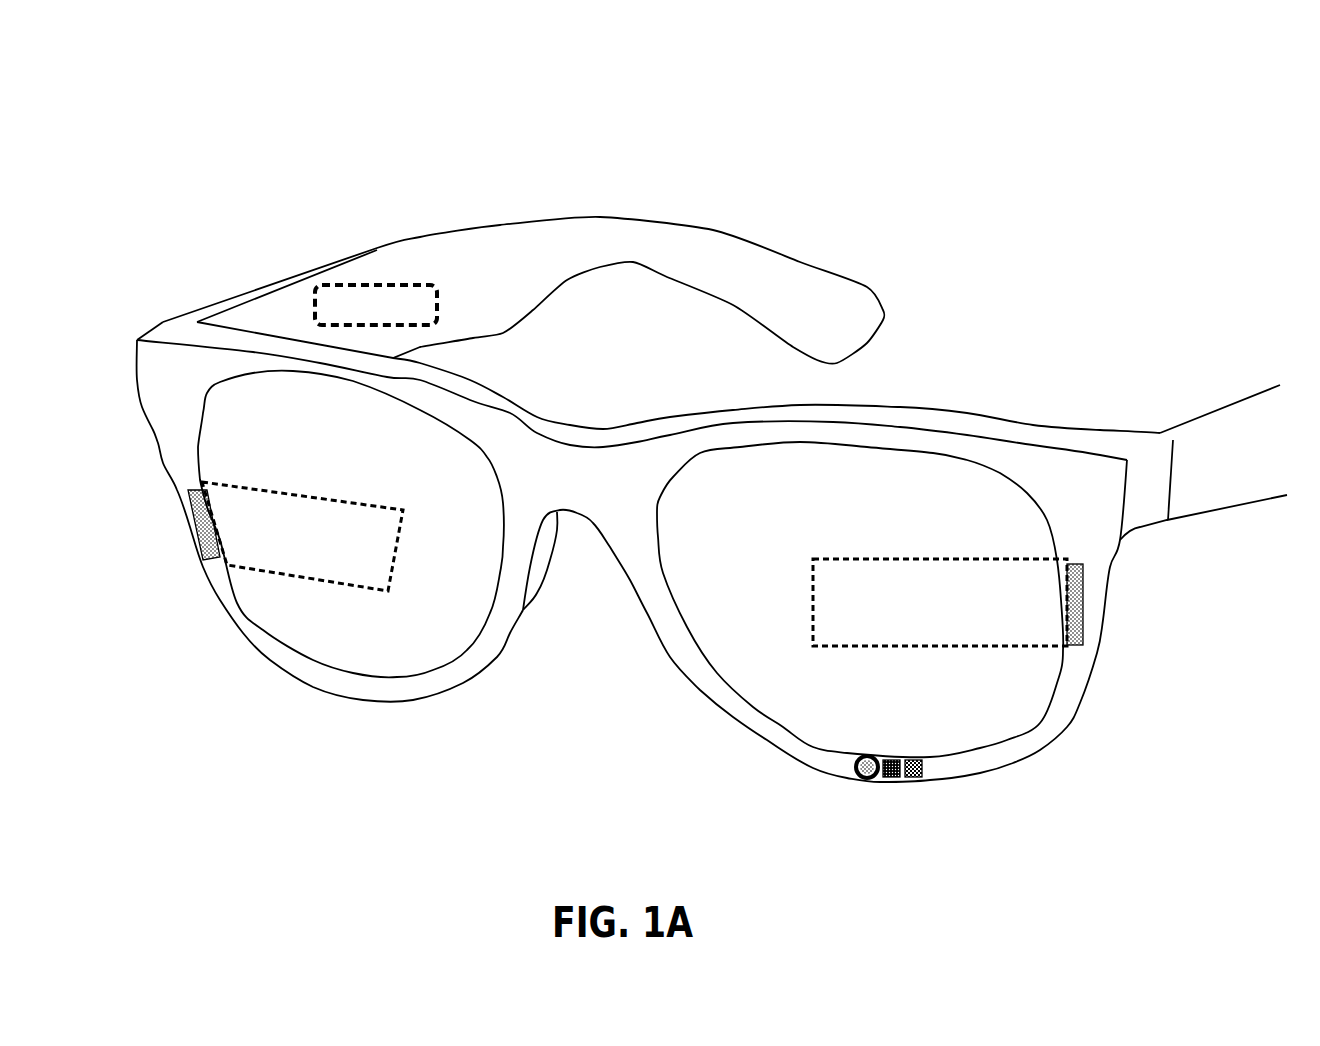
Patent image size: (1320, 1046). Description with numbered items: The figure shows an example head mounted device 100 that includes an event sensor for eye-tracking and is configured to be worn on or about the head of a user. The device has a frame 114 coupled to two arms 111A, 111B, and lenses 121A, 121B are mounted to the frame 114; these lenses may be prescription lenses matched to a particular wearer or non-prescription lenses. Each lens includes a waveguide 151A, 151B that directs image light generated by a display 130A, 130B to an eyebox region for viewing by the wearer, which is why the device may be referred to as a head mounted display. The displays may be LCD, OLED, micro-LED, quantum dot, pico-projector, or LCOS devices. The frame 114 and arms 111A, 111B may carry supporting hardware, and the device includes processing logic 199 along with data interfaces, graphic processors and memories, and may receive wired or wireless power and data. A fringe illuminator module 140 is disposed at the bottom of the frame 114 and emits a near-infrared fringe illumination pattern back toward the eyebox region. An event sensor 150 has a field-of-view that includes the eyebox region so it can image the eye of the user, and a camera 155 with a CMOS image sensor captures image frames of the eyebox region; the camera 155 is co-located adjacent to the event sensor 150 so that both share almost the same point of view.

The head mounted device 100 is at (1240, 85).
The frame 114 is at (190, 384).
The arm 111A is at (535, 279).
The arm 111B is at (1243, 476).
The lens 121A is at (470, 568).
The lens 121B is at (790, 491).
The processing logic 199 is at (393, 317).
The waveguide 151A is at (230, 481).
The waveguide 151B is at (1060, 647).
The display 130A is at (197, 530).
The display 130B is at (1083, 607).
The event sensor 150 is at (890, 757).
The camera 155 is at (912, 756).
The fringe illuminator module 140 is at (858, 780).